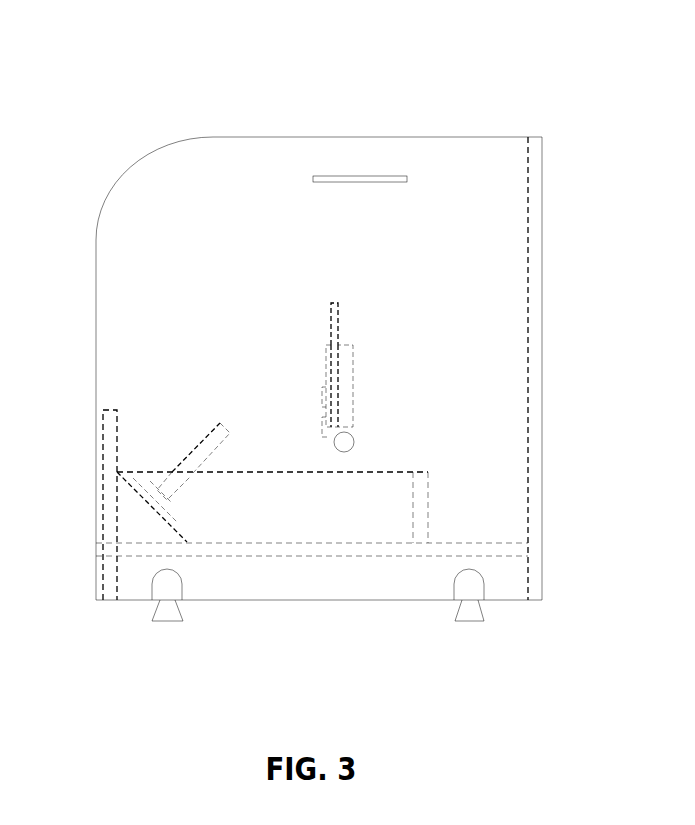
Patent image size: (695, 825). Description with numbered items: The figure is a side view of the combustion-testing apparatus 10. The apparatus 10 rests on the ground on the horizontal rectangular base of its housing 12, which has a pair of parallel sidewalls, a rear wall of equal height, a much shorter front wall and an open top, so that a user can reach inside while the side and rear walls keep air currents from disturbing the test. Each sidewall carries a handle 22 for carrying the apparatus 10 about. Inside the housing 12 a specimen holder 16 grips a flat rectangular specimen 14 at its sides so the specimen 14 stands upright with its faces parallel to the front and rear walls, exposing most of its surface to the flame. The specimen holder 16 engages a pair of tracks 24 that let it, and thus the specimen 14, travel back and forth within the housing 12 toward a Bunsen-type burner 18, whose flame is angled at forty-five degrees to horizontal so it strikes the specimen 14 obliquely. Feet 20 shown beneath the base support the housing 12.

The apparatus 10 is at (462, 88).
The housing 12 is at (283, 137).
The specimen 14 is at (338, 320).
The specimen holder 16 is at (350, 442).
The burner 18 is at (207, 437).
The feet 20 is at (467, 621).
The handle 22 is at (370, 176).
The tracks 24 is at (332, 502).